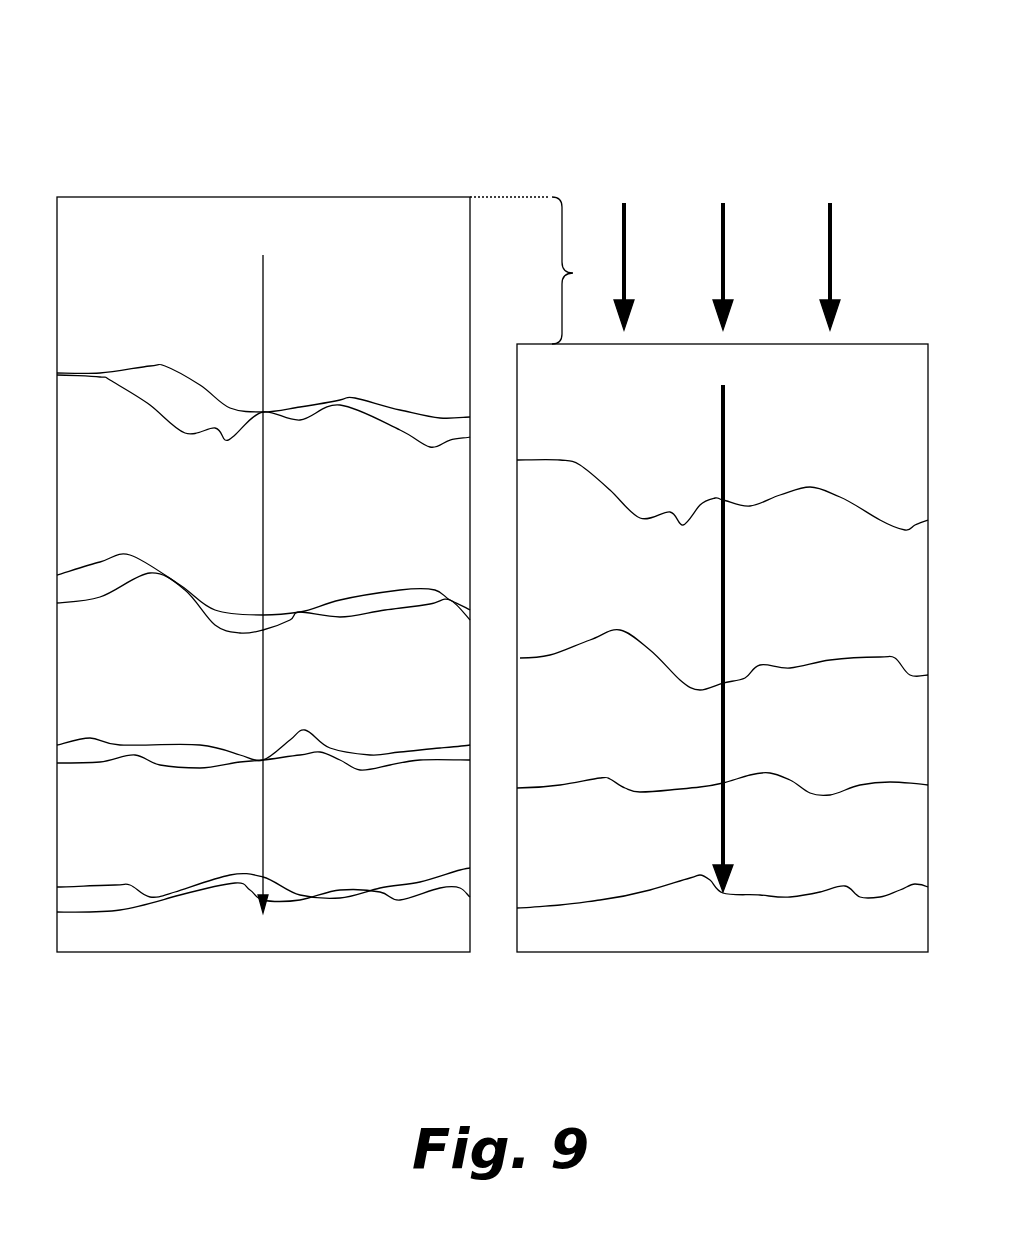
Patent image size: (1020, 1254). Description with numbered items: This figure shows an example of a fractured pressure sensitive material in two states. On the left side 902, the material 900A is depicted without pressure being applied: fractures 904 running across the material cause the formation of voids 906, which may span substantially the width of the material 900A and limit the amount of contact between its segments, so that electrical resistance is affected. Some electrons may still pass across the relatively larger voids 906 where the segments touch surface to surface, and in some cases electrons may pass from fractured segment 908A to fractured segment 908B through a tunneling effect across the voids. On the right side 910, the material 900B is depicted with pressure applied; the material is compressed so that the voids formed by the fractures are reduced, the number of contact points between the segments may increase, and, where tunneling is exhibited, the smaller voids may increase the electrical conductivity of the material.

The material without pressure applied 900A is at (272, 86).
The material with pressure applied 900B is at (884, 263).
The left side 902 is at (102, 163).
The fractures 904 is at (334, 383).
The voids 906 is at (157, 387).
The fractured segment 908A is at (203, 496).
The fractured segment 908B is at (177, 672).
The right side 910 is at (663, 145).